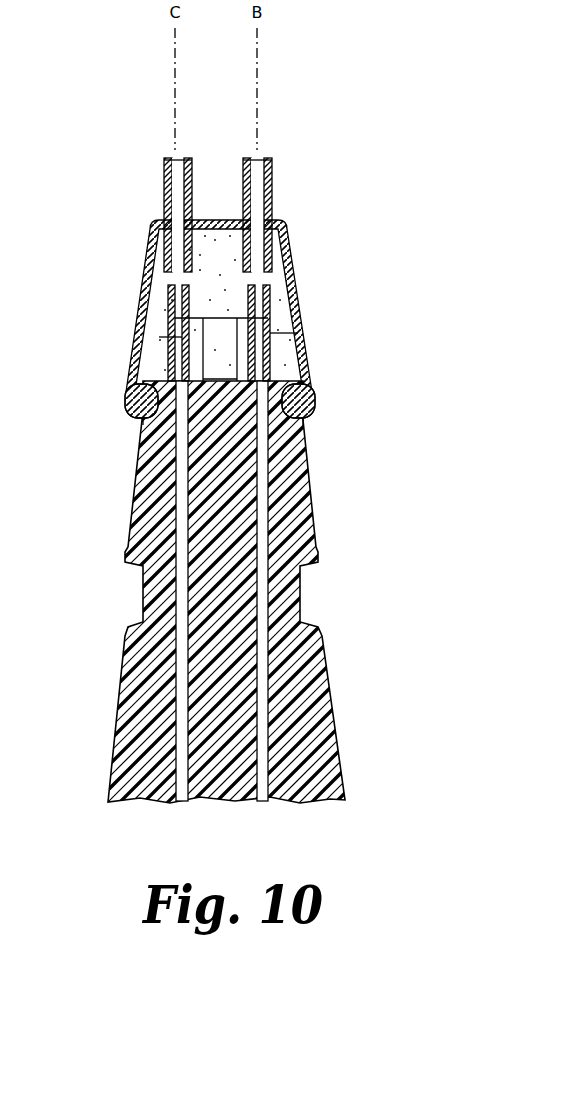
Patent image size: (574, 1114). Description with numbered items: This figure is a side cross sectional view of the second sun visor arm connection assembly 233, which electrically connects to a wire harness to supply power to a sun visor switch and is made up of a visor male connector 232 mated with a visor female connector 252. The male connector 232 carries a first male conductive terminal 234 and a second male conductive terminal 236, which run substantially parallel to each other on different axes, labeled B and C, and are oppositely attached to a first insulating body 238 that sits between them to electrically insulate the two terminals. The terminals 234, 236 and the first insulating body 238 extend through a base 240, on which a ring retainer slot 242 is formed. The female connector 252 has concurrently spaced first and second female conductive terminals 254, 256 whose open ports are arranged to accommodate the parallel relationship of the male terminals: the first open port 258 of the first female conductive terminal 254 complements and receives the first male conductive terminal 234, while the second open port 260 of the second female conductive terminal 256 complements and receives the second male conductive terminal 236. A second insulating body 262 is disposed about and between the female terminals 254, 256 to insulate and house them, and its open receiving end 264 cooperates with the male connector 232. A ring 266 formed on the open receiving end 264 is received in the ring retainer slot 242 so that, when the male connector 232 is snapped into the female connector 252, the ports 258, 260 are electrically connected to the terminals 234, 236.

The visor male connector 232 is at (322, 488).
The second sun visor arm connection assembly 233 is at (213, 312).
The first male conductive terminal 234 is at (277, 358).
The second male conductive terminal 236 is at (168, 352).
The first insulating body 238 is at (222, 345).
The base 240 is at (128, 380).
The ring retainer slot 242 is at (290, 384).
The visor female connector 252 is at (302, 247).
The first female conductive terminal 254 is at (272, 180).
The second female conductive terminal 256 is at (165, 196).
The first open port 258 is at (280, 318).
The second open port 260 is at (160, 337).
The second insulating body 262 is at (305, 333).
The open receiving end 264 is at (300, 415).
The ring 266 is at (128, 414).